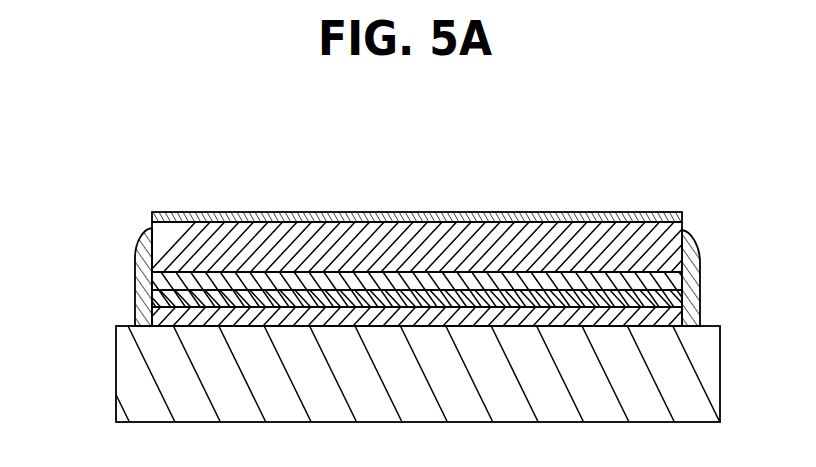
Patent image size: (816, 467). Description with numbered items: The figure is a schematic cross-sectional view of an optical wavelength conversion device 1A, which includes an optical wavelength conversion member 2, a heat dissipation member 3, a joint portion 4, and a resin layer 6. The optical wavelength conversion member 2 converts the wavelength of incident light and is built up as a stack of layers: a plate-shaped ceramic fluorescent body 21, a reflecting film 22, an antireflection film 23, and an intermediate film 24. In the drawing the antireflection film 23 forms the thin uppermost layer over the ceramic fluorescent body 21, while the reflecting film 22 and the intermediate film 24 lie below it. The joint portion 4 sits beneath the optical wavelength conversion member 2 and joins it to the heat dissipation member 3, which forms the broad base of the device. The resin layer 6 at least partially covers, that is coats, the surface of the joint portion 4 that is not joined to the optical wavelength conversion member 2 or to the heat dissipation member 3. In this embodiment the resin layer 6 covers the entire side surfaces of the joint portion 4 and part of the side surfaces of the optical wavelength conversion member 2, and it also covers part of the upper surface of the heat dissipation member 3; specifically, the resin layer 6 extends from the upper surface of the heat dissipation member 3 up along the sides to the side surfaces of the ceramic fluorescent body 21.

The optical wavelength conversion device 1A is at (478, 151).
The optical wavelength conversion member 2 is at (146, 219).
The heat dissipation member 3 is at (147, 375).
The joint portion 4 is at (170, 317).
The resin layer 6 is at (140, 264).
The ceramic fluorescent body 21 is at (667, 242).
The reflecting film 22 is at (673, 281).
The antireflection film 23 is at (618, 211).
The intermediate film 24 is at (672, 299).